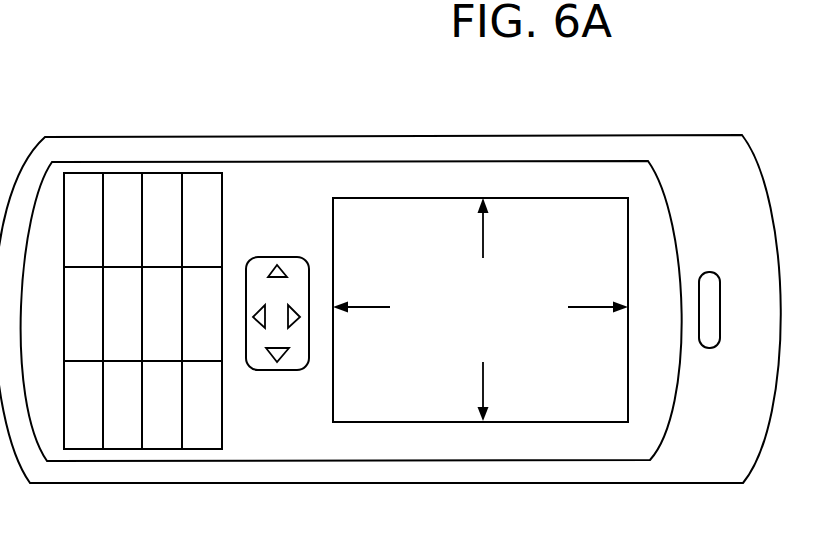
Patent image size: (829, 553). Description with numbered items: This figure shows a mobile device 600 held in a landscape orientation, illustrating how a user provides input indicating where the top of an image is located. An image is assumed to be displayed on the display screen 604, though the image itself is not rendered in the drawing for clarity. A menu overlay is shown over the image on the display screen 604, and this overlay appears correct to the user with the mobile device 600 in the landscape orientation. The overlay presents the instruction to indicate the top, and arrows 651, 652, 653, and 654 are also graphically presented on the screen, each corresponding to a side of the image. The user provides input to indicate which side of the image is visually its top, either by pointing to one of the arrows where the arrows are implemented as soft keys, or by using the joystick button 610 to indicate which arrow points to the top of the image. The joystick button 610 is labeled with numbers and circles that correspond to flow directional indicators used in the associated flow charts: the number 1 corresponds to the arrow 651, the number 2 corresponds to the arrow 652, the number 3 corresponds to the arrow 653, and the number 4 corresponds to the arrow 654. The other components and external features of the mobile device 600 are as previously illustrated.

The mobile device 600 is at (672, 121).
The display screen 604 is at (438, 198).
The joystick button 610 is at (278, 358).
The arrow 651 is at (610, 309).
The arrow 652 is at (486, 223).
The arrow 653 is at (479, 404).
The arrow 654 is at (355, 305).
The number 1 is at (298, 313).
The number 2 is at (277, 270).
The number 3 is at (270, 355).
The number 4 is at (257, 316).